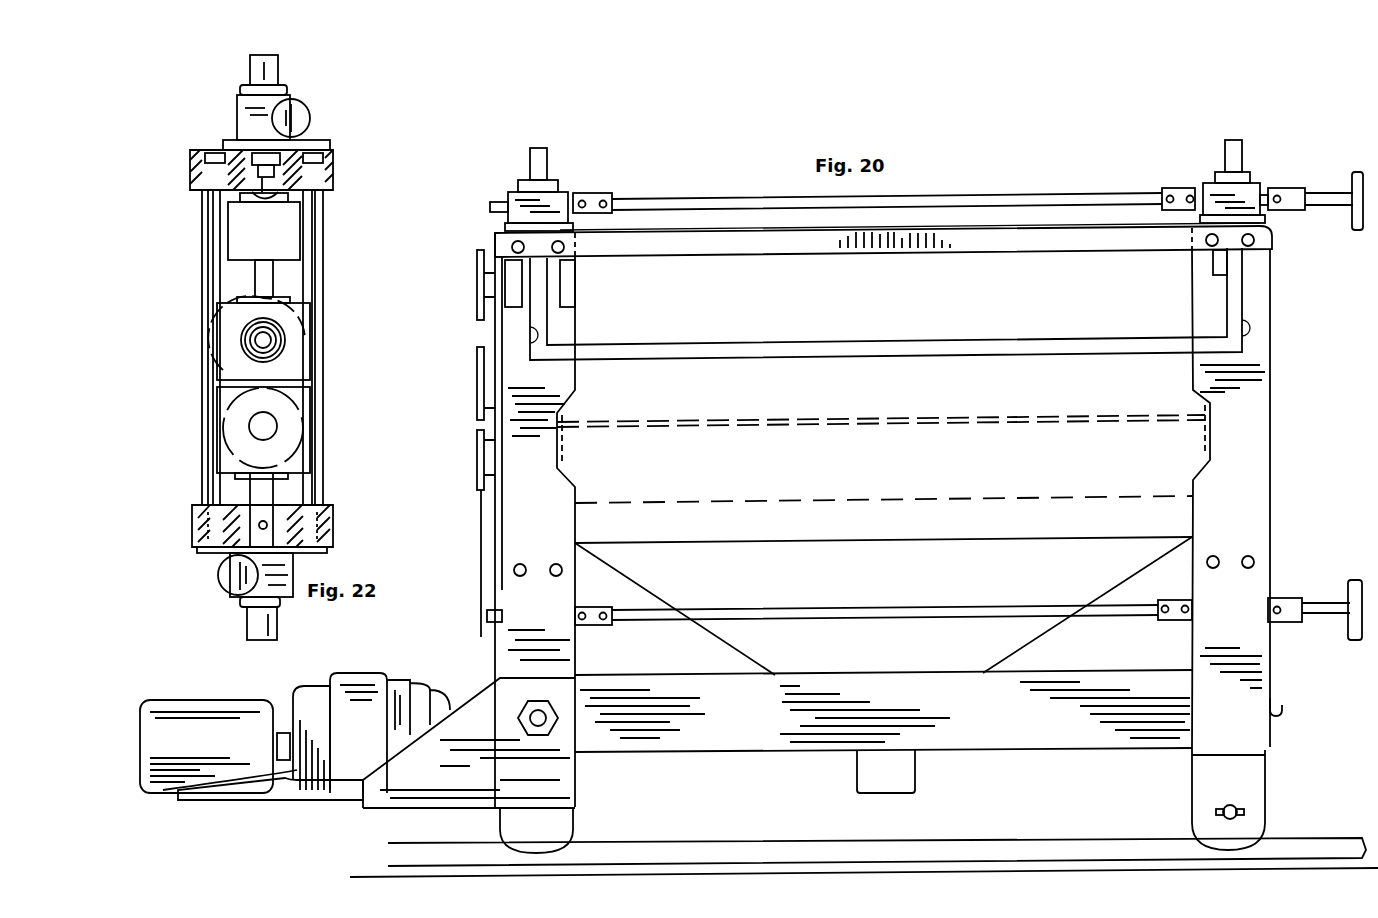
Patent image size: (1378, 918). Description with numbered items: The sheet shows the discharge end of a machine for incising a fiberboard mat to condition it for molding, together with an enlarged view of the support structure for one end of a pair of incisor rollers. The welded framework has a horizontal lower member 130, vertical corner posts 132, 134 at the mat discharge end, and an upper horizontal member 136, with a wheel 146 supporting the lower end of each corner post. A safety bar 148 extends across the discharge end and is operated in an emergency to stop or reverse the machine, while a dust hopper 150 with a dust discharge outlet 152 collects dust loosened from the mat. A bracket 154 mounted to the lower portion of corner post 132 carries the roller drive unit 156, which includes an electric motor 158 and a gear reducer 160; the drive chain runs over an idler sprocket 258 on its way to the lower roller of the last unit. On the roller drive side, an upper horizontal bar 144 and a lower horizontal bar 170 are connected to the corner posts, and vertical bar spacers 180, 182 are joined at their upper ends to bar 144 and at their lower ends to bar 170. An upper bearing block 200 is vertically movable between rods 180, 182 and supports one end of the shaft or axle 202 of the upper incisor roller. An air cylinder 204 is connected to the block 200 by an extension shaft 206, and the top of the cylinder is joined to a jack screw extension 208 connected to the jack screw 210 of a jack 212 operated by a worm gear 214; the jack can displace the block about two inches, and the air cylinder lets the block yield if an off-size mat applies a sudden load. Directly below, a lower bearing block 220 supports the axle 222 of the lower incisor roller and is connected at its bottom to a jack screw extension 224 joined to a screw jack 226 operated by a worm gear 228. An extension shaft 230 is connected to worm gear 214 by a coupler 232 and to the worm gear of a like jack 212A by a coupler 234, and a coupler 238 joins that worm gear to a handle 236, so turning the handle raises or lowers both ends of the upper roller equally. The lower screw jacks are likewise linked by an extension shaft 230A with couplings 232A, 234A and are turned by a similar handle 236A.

In FIG. 20, the horizontal lower member 130 is at (768, 752).
In FIG. 20, the vertical corner post 132 is at (542, 539).
In FIG. 20, the vertical corner post 134 is at (1238, 539).
In FIG. 20, the upper horizontal member 136 is at (942, 245).
In FIG. 22, the upper horizontal bar 144 is at (330, 185).
In FIG. 20, the wheel 146 is at (545, 840).
In FIG. 20, the safety bar 148 is at (767, 345).
In FIG. 20, the dust hopper 150 is at (702, 632).
In FIG. 20, the dust discharge outlet 152 is at (915, 785).
In FIG. 20, the bracket 154 is at (490, 782).
In FIG. 22, the roller drive unit 156 is at (295, 735).
In FIG. 22, the electric motor 158 is at (165, 775).
In FIG. 22, the gear reducer 160 is at (365, 682).
In FIG. 22, the horizontal bar 170 is at (330, 520).
In FIG. 22, the vertical bar spacer 180 is at (205, 277).
In FIG. 22, the vertical bar spacer 182 is at (315, 268).
In FIG. 22, the upper bearing block 200 is at (220, 315).
In FIG. 22, the shaft or axle 202 is at (280, 340).
In FIG. 22, the air cylinder 204 is at (290, 230).
In FIG. 22, the extension shaft 206 is at (262, 280).
In FIG. 22, the jack screw extension 208 is at (262, 195).
In FIG. 22, the jack screw 210 is at (333, 160).
In FIG. 22, the jack 212 is at (253, 116).
In FIG. 20, the jack 212 is at (508, 198).
In FIG. 20, the jack 212A is at (1213, 195).
In FIG. 22, the worm gear 214 is at (300, 117).
In FIG. 22, the lower bearing block 220 is at (222, 398).
In FIG. 22, the axle 222 is at (275, 425).
In FIG. 22, the jack screw extension 224 is at (265, 495).
In FIG. 22, the screw jack 226 is at (280, 570).
In FIG. 22, the worm gear 228 is at (230, 582).
In FIG. 20, the extension shaft 230 is at (733, 198).
In FIG. 20, the extension shaft 230A is at (820, 610).
In FIG. 20, the coupler 232 is at (592, 193).
In FIG. 20, the coupling 232A is at (592, 627).
In FIG. 20, the coupler 234 is at (1165, 195).
In FIG. 20, the coupling 234A is at (1175, 622).
In FIG. 20, the handle 236 is at (1352, 215).
In FIG. 20, the handle 236A is at (1348, 618).
In FIG. 20, the coupler 238 is at (1290, 193).
In FIG. 20, the idler sprocket 258 is at (478, 275).